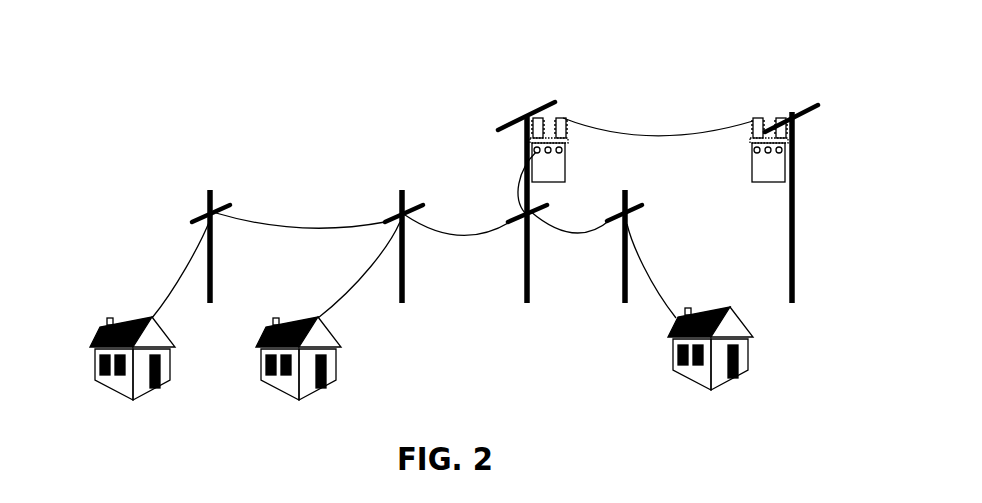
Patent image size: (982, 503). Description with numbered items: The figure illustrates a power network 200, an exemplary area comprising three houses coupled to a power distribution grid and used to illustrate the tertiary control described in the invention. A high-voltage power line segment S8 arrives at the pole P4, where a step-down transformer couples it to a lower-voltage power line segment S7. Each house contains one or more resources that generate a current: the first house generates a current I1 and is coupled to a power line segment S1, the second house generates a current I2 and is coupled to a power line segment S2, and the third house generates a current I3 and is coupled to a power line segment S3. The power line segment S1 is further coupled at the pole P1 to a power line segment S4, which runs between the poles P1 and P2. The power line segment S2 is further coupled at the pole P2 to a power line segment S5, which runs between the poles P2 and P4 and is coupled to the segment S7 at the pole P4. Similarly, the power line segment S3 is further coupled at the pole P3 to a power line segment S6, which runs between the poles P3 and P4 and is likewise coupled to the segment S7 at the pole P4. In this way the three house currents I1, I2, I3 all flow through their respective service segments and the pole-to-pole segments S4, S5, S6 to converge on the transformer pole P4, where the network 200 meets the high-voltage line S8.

The power network 200 is at (121, 80).
The pole P1 is at (198, 184).
The pole P2 is at (390, 177).
The pole P3 is at (664, 200).
The pole P4 is at (510, 80).
The power line segment S1 is at (181, 269).
The power line segment S2 is at (359, 270).
The power line segment S3 is at (651, 271).
The power line segment S4 is at (300, 214).
The power line segment S5 is at (457, 221).
The power line segment S6 is at (570, 220).
The power line segment S7 is at (515, 182).
The high-voltage power line segment S8 is at (658, 127).
The current I1 is at (135, 370).
The current I2 is at (302, 370).
The current I3 is at (715, 354).